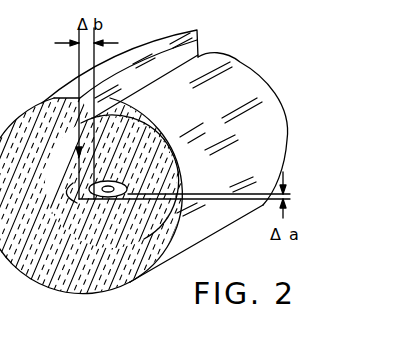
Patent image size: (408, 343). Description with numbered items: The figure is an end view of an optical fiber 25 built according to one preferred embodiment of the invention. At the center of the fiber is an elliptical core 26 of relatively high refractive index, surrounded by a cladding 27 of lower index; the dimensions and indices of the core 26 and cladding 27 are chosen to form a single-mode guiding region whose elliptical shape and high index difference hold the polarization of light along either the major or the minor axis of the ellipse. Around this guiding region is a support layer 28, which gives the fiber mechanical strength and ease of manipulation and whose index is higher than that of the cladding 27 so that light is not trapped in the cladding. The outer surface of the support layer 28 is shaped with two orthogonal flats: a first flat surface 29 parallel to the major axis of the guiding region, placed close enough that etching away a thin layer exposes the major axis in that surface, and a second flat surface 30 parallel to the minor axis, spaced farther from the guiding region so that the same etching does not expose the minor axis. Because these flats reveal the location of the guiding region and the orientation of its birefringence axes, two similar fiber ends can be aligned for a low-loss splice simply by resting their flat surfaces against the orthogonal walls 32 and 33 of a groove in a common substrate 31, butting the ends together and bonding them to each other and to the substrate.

The optical fiber 25 is at (275, 91).
The elliptical core 26 is at (100, 180).
The cladding 27 is at (103, 183).
The support layer 28 is at (152, 118).
The first flat surface 29 is at (108, 198).
The second flat surface 30 is at (127, 195).
The common substrate 31 is at (38, 284).
The orthogonal wall 32 is at (167, 155).
The orthogonal wall 33 is at (120, 66).